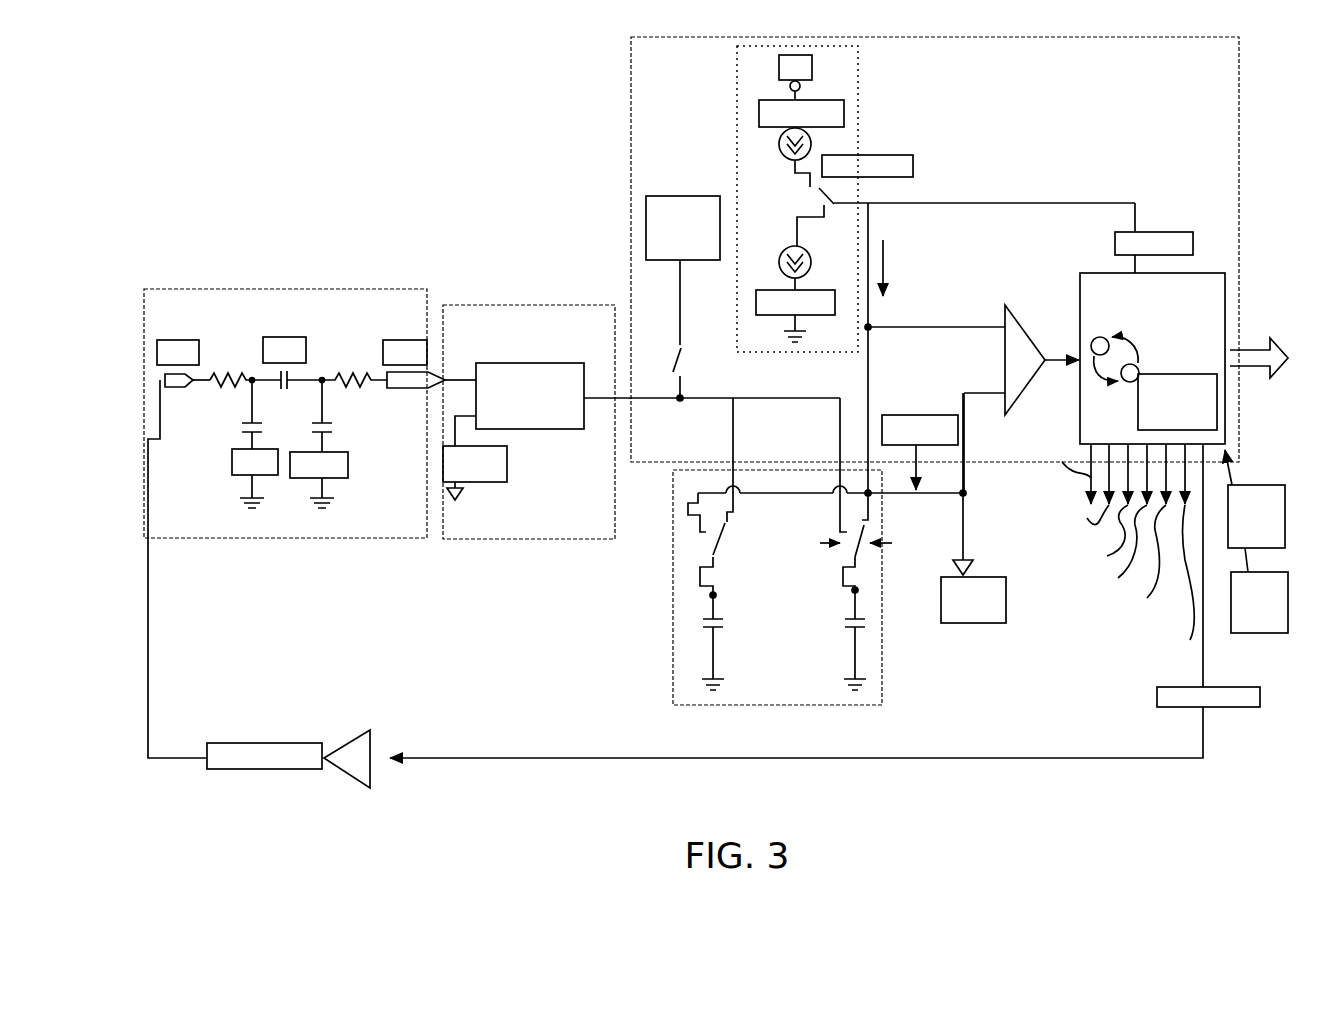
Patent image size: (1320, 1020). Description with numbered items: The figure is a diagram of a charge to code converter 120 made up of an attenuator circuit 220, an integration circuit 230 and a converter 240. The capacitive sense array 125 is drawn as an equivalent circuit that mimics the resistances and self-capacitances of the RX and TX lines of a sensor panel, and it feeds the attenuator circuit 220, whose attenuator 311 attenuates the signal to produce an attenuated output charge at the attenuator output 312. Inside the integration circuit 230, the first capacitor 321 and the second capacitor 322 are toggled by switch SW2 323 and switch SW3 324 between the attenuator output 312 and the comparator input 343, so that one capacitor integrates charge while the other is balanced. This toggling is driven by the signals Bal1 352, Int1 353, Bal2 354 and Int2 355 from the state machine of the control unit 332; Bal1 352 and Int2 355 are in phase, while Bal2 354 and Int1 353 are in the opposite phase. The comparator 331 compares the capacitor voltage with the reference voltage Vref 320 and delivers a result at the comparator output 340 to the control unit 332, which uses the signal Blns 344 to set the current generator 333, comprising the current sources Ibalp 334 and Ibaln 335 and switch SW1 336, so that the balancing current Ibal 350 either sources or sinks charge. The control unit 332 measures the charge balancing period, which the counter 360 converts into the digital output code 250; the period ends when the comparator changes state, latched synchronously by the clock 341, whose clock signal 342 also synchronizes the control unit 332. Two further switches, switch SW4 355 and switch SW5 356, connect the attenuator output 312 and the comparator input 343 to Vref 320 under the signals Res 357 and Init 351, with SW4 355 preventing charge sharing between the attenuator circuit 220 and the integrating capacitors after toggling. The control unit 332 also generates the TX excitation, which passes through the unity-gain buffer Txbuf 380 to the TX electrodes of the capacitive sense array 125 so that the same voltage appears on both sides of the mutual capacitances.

The charge to code converter 120 is at (363, 97).
The capacitive sense array 125 is at (303, 289).
The attenuator circuit 220 is at (541, 305).
The attenuator 311 is at (578, 396).
The attenuator output 312 is at (607, 398).
The Vref 320 is at (724, 409).
The converter 240 is at (632, 133).
The switch SW4 355 is at (680, 340).
The Init 351 is at (676, 371).
The current generator 333 is at (858, 133).
The Ibalp 334 is at (801, 143).
The switch SW1 336 is at (836, 196).
The Ibaln 335 is at (795, 294).
The Ibal 350 is at (898, 348).
The comparator input 343 is at (990, 325).
The comparator 331 is at (1032, 338).
The comparator output 340 is at (1062, 352).
The Blns 344 is at (1154, 238).
The control unit 332 is at (1132, 461).
The counter 360 is at (1177, 402).
The digital output code 250 is at (1268, 319).
The Res 357 is at (920, 452).
The clock signal 342 is at (1255, 499).
The clock 341 is at (1259, 590).
The Txbuf 380 is at (733, 737).
The integration circuit 230 is at (678, 603).
The Bal1 352 is at (700, 543).
The Int1 353 is at (726, 543).
The switch SW2 323 is at (716, 560).
The first capacitor 321 is at (708, 655).
The Bal2 354 is at (898, 534).
The switch SW3 324 is at (857, 560).
The second capacitor 322 is at (858, 598).
The switch SW5 356 is at (917, 490).